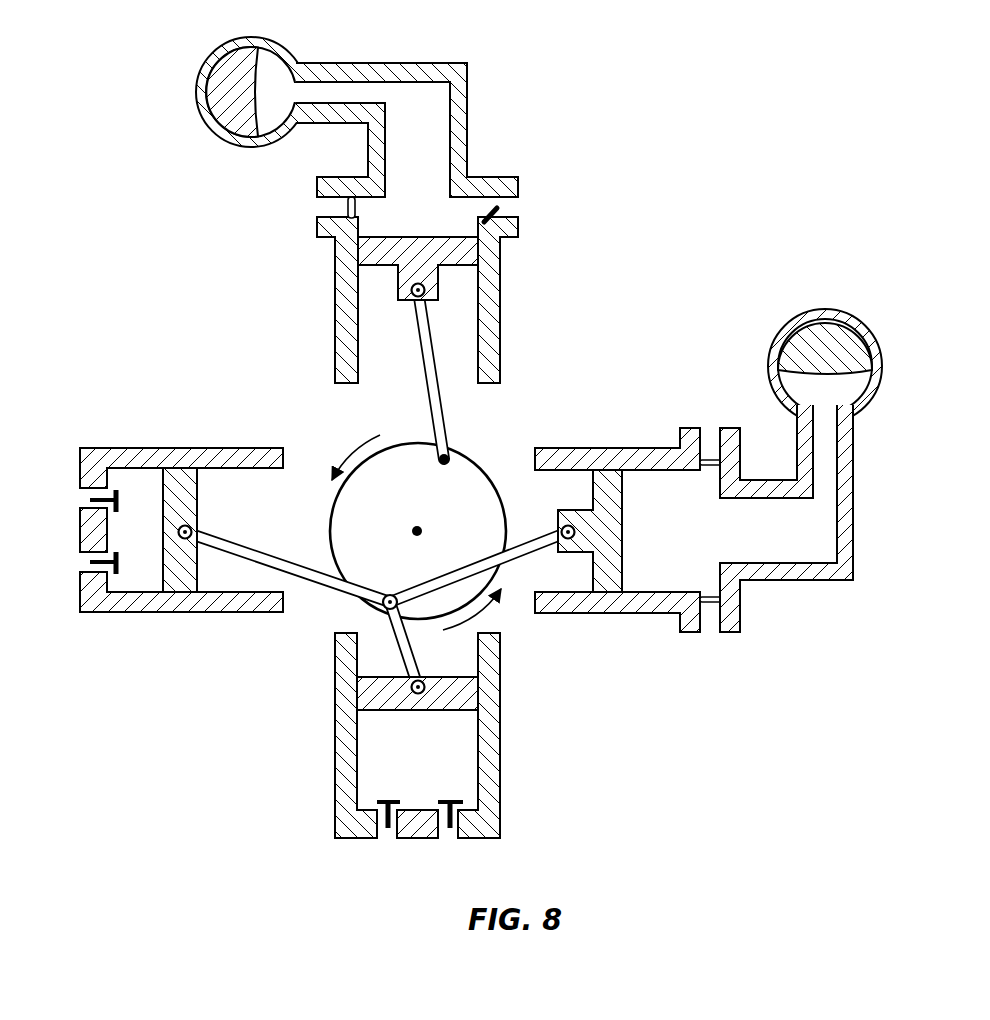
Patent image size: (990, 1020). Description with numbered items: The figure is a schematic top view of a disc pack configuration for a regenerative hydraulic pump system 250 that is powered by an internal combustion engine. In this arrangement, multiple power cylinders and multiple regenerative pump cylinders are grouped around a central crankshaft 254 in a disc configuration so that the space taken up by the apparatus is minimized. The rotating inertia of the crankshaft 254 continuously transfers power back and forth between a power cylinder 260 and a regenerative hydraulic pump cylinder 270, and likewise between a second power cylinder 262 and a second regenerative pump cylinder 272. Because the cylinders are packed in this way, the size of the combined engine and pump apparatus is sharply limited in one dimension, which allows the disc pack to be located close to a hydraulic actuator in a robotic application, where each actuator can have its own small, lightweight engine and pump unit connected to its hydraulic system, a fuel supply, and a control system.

The regenerative hydraulic pump system 250 is at (523, 437).
The crankshaft 254 is at (455, 490).
The power cylinder 260 is at (163, 458).
The second power cylinder 262 is at (335, 718).
The regenerative hydraulic pump cylinder 270 is at (845, 530).
The second regenerative pump cylinder 272 is at (463, 121).